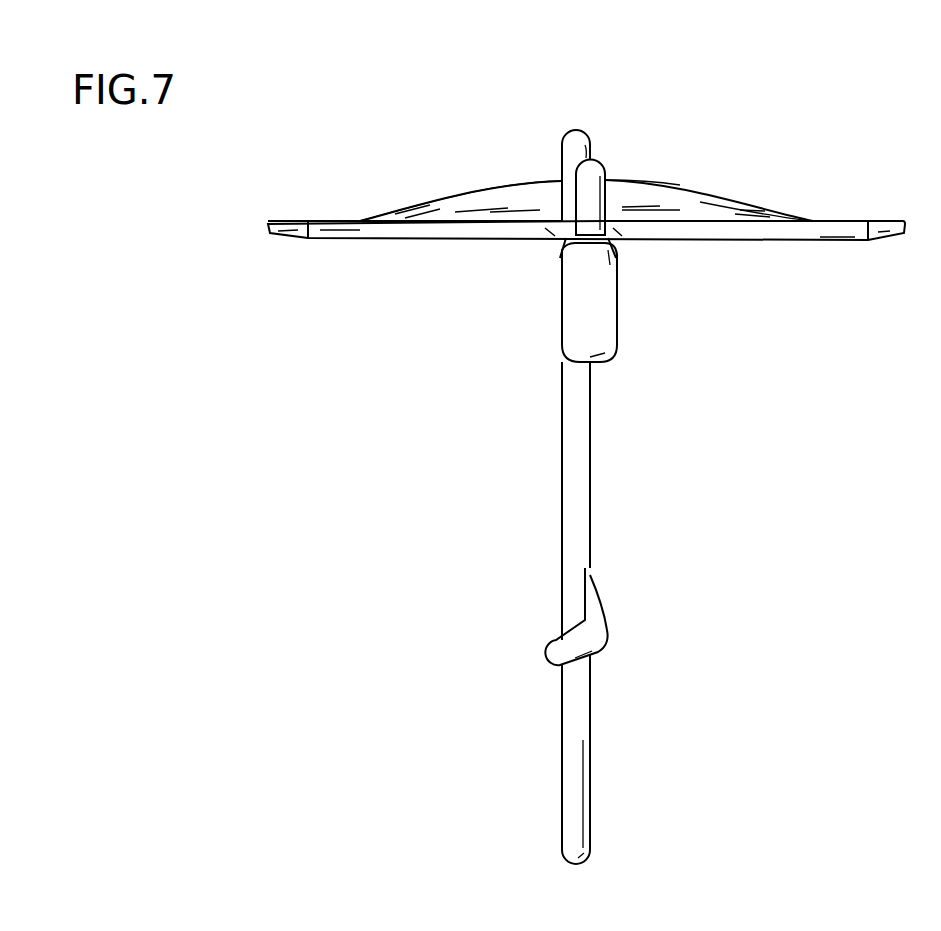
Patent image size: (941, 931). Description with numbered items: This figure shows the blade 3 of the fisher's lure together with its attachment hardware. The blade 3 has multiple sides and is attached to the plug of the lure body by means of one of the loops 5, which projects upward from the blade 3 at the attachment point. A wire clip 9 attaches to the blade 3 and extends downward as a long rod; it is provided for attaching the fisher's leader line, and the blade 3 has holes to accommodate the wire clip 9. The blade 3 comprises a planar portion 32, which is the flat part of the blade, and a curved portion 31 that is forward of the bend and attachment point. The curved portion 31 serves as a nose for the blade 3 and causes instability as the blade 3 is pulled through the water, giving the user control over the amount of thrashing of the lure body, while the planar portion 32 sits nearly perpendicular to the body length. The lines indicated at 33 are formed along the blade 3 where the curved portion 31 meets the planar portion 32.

The blade 3 is at (847, 220).
The loop 5 is at (588, 188).
The wire clip 9 is at (573, 531).
The curved portion 31 is at (700, 202).
The planar portion 32 is at (763, 218).
The fold 33 is at (508, 182).